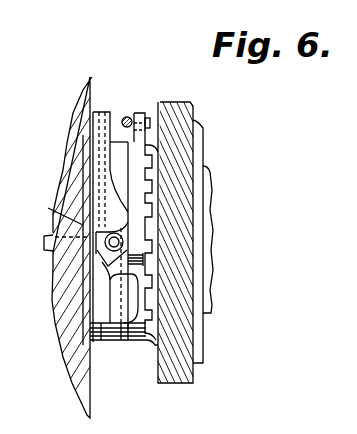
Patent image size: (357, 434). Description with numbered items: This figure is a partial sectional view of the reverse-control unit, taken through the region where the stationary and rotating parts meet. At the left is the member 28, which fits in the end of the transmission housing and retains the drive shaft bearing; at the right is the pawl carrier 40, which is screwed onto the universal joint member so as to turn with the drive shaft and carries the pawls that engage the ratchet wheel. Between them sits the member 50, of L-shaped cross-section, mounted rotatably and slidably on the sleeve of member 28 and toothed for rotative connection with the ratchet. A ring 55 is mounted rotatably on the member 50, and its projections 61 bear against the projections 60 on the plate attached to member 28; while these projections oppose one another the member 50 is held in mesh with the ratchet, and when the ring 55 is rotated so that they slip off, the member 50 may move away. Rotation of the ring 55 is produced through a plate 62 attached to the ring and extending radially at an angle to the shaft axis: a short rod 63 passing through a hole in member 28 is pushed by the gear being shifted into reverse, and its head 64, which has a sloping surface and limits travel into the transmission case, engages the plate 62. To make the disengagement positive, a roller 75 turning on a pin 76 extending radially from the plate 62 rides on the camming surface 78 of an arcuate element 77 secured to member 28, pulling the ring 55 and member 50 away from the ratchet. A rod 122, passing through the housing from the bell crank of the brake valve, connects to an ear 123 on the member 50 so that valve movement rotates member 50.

The member 28 is at (88, 406).
The pawl carrier 40 is at (201, 143).
The member 50 is at (141, 342).
The ring 55 is at (117, 144).
The projections 60 is at (90, 330).
The projections 61 is at (100, 336).
The plate 62 is at (100, 254).
The rod 63 is at (43, 242).
The head 64 is at (55, 213).
The roller 75 is at (122, 237).
The pin 76 is at (124, 230).
The arcuate element 77 is at (125, 330).
The camming surface 78 is at (110, 280).
The rod 122 is at (130, 116).
The ear 123 is at (149, 117).